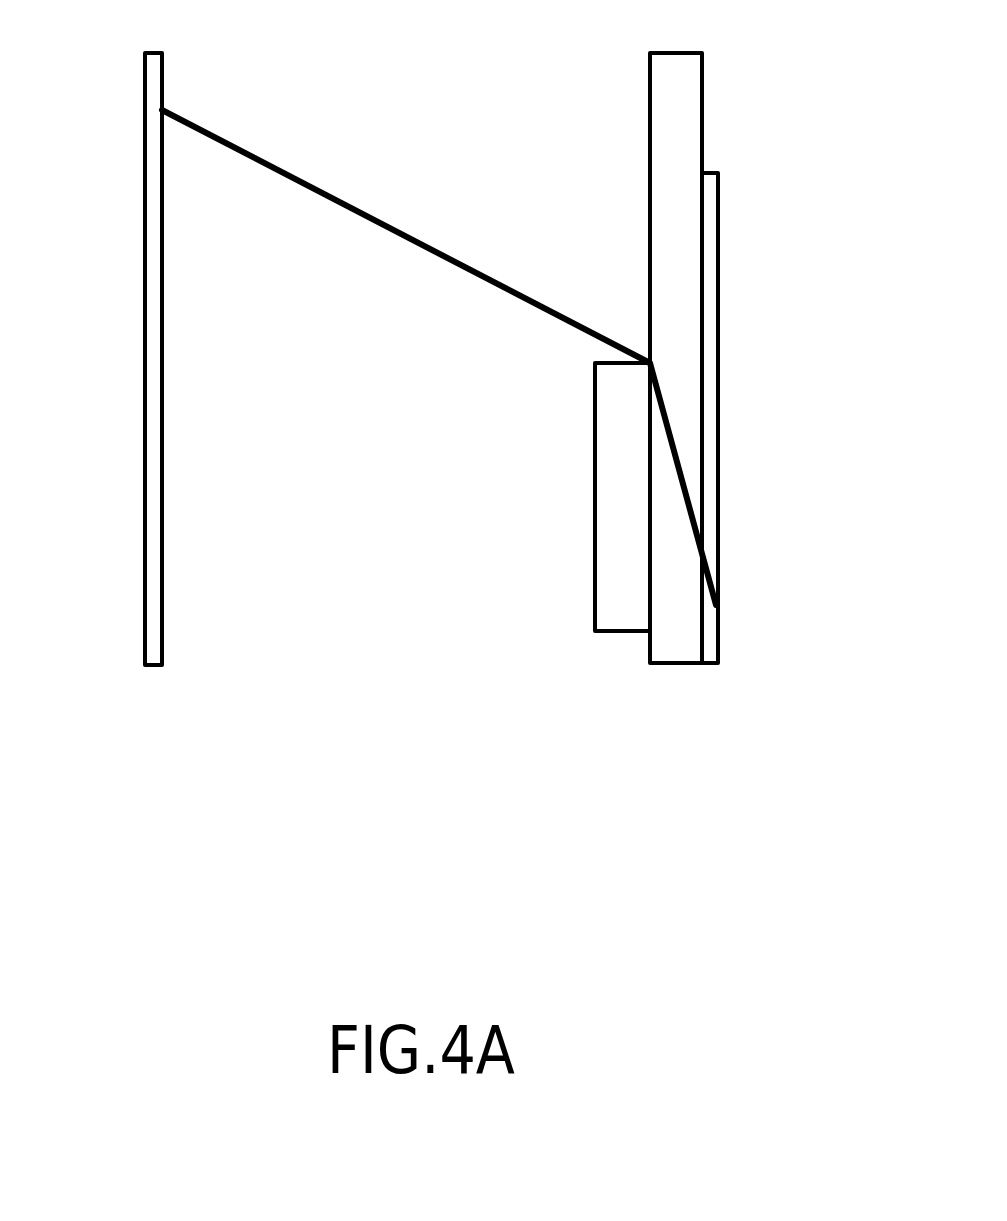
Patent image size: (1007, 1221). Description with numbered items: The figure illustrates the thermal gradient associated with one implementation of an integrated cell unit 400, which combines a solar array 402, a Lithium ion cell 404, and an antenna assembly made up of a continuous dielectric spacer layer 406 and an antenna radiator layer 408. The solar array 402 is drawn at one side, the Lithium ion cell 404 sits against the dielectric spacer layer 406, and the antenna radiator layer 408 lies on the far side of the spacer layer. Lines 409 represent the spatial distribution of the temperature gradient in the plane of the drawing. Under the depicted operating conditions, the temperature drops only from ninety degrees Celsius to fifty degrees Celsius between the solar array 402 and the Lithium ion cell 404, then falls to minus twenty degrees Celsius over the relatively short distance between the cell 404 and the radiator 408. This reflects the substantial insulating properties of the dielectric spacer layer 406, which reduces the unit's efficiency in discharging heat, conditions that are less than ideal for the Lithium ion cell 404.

The integrated cell unit 400 is at (370, 714).
The solar array 402 is at (163, 585).
The Lithium ion cell 404 is at (595, 502).
The continuous dielectric spacer layer 406 is at (673, 665).
The antenna radiator layer 408 is at (707, 651).
The lines representing temperature gradient 409 is at (445, 252).